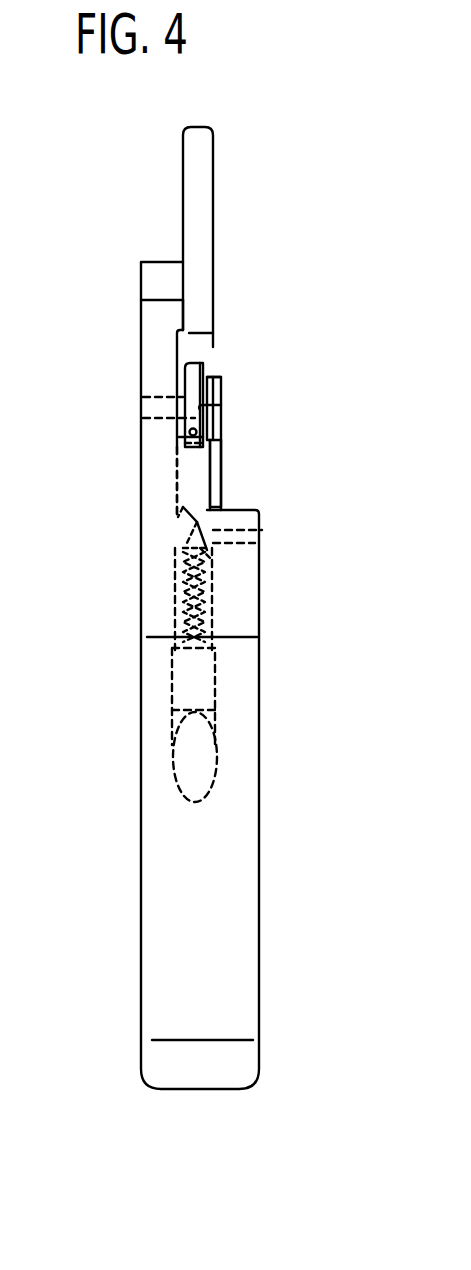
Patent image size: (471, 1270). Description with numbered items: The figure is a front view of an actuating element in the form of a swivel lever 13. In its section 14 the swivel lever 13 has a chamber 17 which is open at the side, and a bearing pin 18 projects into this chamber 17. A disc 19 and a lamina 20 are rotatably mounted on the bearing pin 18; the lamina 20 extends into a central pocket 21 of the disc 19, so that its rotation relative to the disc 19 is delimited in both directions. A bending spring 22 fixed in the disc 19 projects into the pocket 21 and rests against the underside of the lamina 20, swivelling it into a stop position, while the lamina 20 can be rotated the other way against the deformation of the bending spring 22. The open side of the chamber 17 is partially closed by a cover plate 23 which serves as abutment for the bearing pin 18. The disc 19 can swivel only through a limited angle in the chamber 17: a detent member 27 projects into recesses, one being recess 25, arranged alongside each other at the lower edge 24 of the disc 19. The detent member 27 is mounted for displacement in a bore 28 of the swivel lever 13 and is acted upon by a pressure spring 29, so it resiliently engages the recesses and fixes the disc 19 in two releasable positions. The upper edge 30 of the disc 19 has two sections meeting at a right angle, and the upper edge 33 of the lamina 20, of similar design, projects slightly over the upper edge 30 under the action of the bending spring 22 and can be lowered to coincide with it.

The swivel lever 13 is at (137, 652).
The section 14 is at (158, 328).
The chamber 17 is at (187, 333).
The bearing pin 18 is at (140, 402).
The disc 19 is at (180, 477).
The lamina 20 is at (221, 382).
The central pocket 21 is at (218, 408).
The bending spring 22 is at (189, 435).
The cover plate 23 is at (222, 463).
The lower edge 24 is at (180, 520).
The recess 25 is at (262, 530).
The detent member 27 is at (209, 552).
The bore 28 is at (180, 547).
The pressure spring 29 is at (210, 613).
The upper edge 30 is at (210, 376).
The upper edge 33 is at (185, 362).